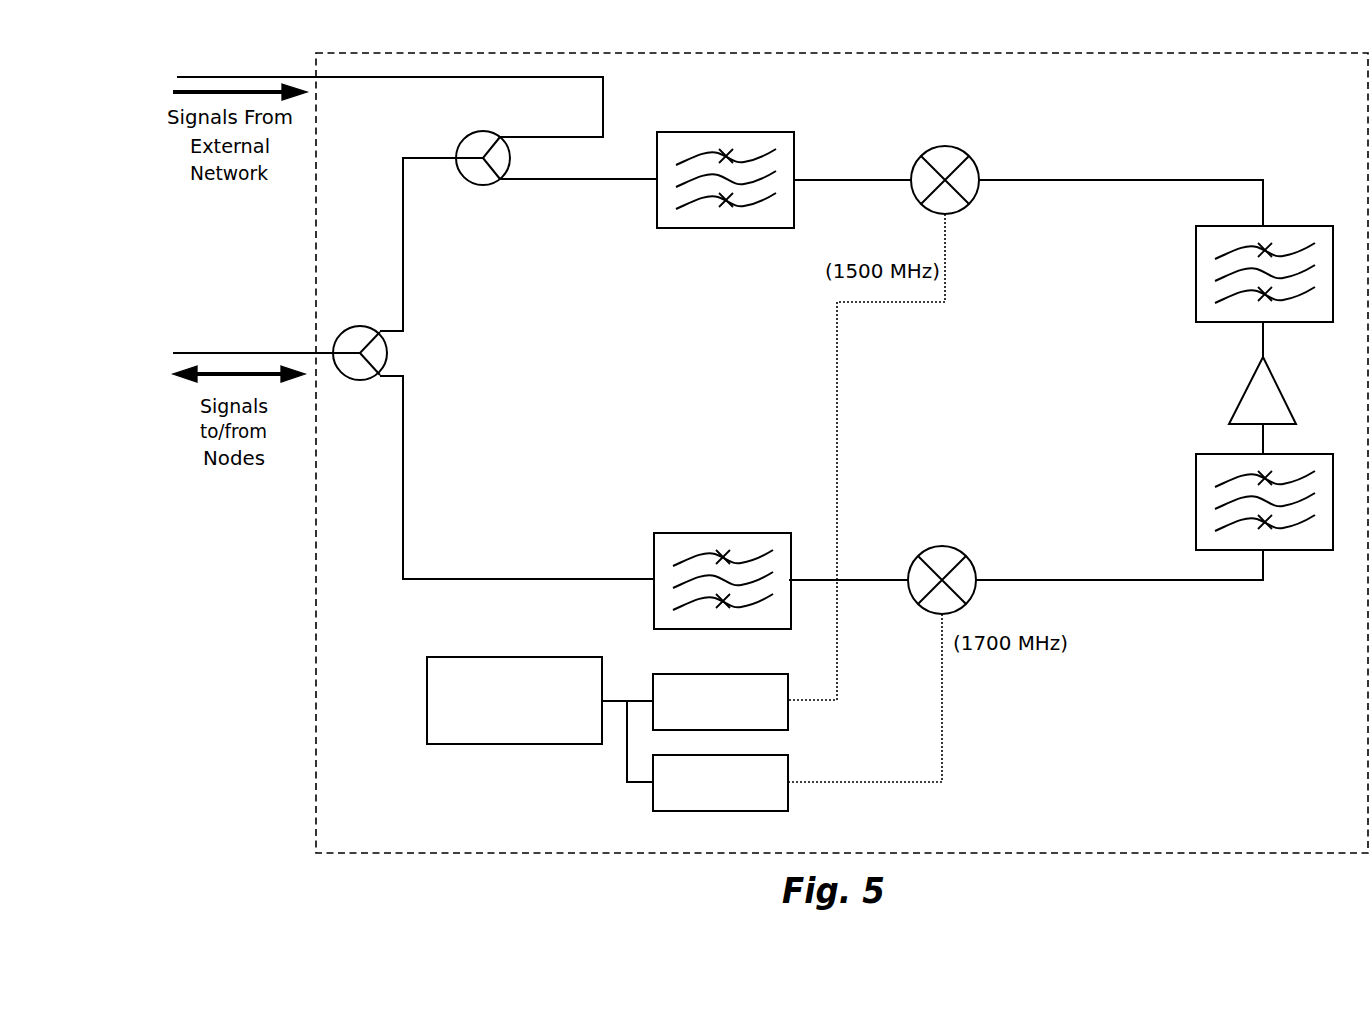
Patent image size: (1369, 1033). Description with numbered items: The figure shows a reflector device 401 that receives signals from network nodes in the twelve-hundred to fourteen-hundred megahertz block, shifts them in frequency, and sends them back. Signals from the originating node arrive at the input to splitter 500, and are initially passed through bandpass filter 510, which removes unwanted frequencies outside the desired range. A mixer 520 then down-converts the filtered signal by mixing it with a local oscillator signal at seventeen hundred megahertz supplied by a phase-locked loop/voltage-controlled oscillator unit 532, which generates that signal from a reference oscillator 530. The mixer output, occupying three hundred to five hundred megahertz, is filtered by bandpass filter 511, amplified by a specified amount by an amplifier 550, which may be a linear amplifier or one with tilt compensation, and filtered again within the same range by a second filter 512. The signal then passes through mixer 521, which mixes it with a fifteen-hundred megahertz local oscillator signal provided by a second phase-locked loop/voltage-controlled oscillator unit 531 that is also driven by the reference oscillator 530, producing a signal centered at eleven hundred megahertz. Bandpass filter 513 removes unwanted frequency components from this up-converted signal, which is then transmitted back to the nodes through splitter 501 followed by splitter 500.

The reflector device 401 is at (842, 438).
The splitter 500 is at (375, 357).
The splitter 501 is at (475, 172).
The bandpass filter 510 is at (724, 549).
The bandpass filter 511 is at (1186, 502).
The second filter 512 is at (1186, 274).
The bandpass filter 513 is at (725, 149).
The mixer 520 is at (941, 563).
The mixer 521 is at (946, 164).
The reference oscillator 530 is at (514, 700).
The phase-locked loop/voltage-controlled oscillator unit 531 is at (720, 702).
The phase-locked loop/voltage-controlled oscillator unit 532 is at (720, 783).
The amplifier 550 is at (1256, 401).